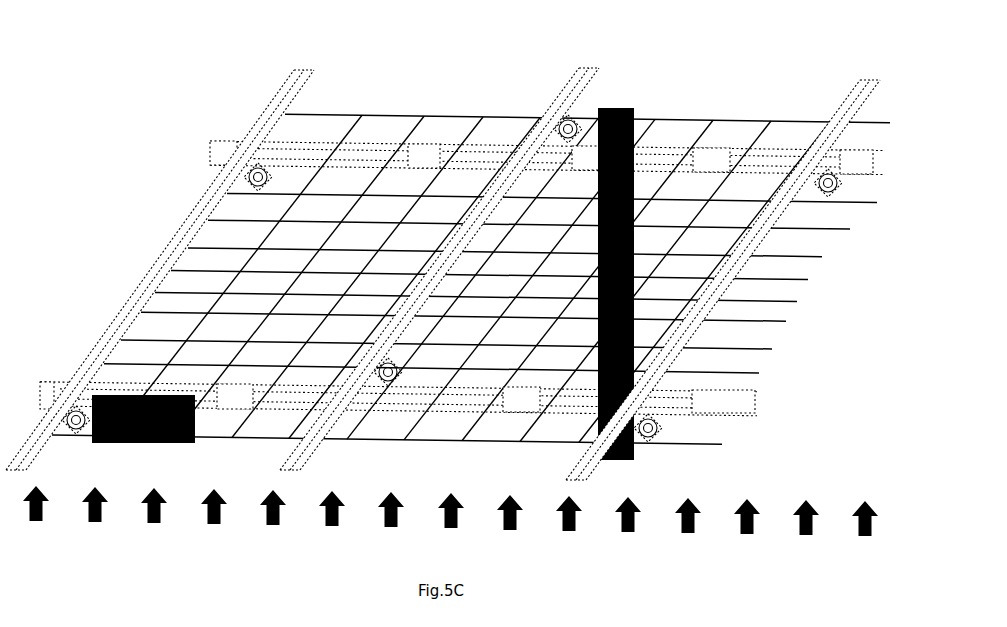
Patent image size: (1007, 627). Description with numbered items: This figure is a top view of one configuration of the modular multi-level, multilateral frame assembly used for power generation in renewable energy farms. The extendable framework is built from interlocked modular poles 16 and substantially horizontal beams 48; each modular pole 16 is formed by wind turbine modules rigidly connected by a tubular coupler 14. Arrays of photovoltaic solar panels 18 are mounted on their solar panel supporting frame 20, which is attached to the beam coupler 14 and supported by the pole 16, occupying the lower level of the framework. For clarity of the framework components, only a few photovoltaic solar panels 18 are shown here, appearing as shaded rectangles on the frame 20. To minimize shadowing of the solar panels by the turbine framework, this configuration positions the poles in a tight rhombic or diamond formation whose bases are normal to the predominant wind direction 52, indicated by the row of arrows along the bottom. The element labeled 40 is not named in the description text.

The tubular coupler 14 is at (577, 113).
The modular pole 16 is at (652, 442).
The photovoltaic solar panels 18 is at (630, 112).
The solar panel supporting frame 20 is at (740, 113).
The support rail 40 is at (528, 130).
The horizontal beams 48 is at (200, 186).
The predominant wind direction 52 is at (513, 507).